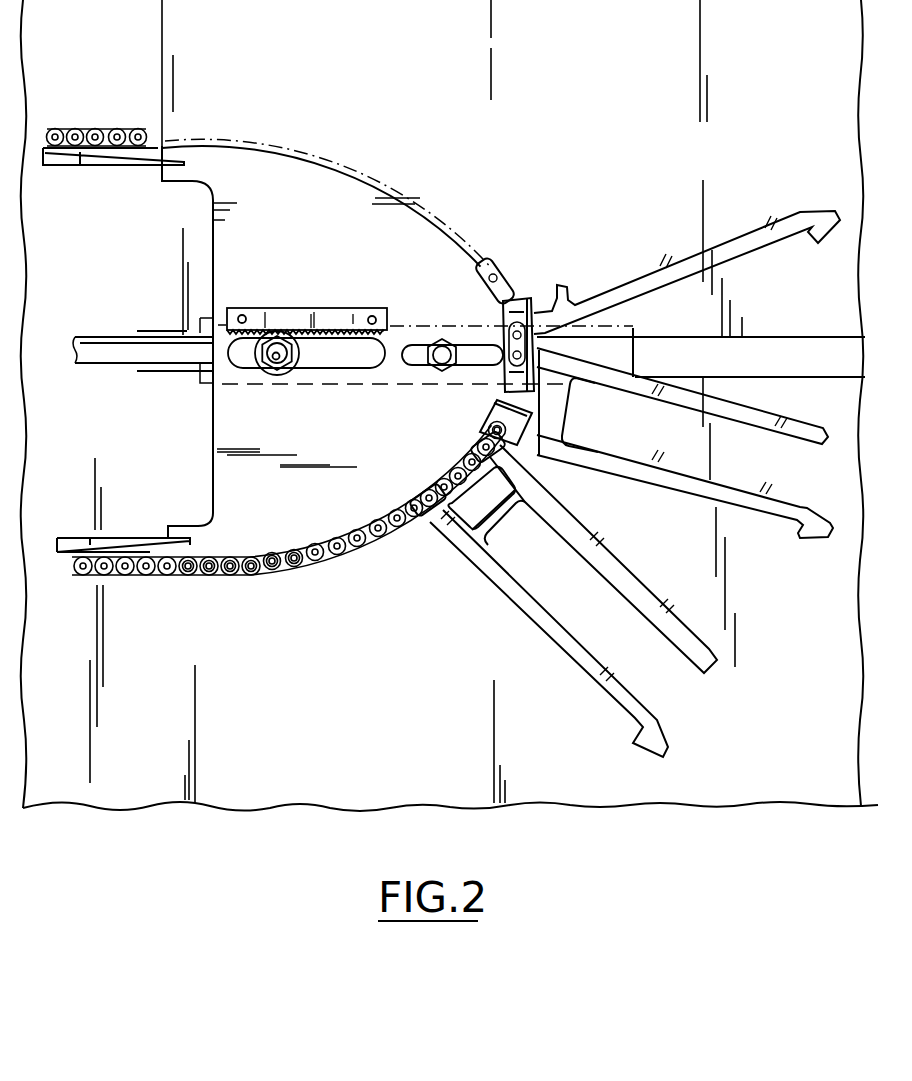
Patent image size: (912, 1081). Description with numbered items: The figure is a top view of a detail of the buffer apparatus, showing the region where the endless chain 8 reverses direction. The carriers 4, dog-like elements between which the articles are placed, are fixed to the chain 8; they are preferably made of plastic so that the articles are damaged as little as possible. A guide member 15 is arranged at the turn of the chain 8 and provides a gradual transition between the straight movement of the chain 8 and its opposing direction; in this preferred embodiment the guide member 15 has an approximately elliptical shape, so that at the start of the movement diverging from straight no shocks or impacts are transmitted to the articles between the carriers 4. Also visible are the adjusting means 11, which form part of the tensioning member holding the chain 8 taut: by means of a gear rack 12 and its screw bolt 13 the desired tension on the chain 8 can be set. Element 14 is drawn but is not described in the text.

The carriers 4 is at (808, 543).
The chain 8 is at (107, 133).
The adjusting means 11 is at (350, 385).
The gear rack 12 is at (333, 322).
The screw bolt 13 is at (275, 358).
The support arm 14 is at (812, 359).
The guide member 15 is at (290, 227).